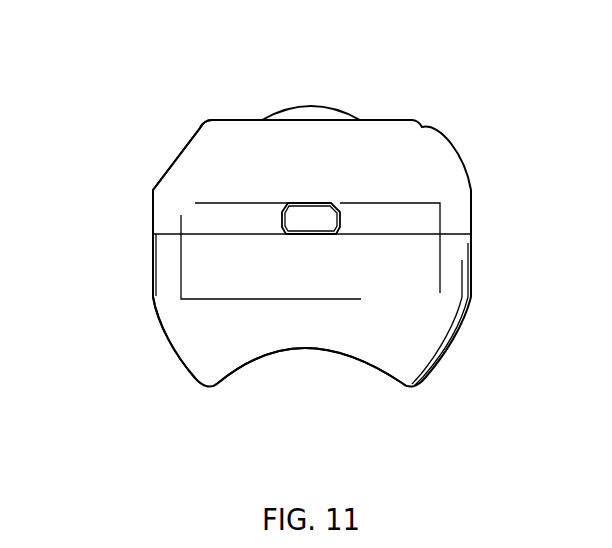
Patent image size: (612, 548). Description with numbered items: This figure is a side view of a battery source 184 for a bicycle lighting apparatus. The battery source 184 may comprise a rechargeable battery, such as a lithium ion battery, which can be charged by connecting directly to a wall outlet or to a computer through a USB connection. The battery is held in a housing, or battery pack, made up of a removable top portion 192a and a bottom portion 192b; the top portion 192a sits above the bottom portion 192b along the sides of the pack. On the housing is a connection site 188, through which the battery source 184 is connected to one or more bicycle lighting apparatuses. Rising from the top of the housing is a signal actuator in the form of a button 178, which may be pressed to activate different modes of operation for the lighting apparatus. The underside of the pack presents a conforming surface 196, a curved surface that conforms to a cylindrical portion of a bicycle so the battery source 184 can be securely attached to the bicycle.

The battery source 184 is at (118, 76).
The button 178 is at (330, 114).
The connection site 188 is at (310, 218).
The removable top portion 192a is at (176, 182).
The bottom portion 192b is at (180, 322).
The conforming surface 196 is at (306, 402).